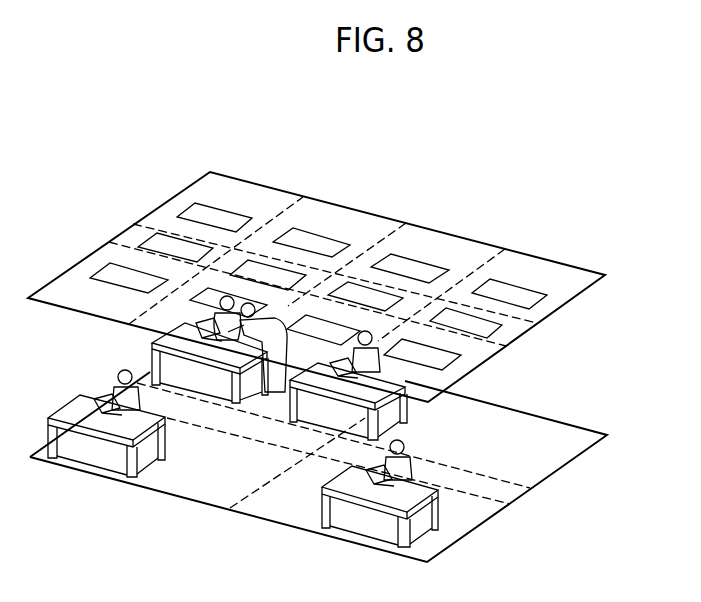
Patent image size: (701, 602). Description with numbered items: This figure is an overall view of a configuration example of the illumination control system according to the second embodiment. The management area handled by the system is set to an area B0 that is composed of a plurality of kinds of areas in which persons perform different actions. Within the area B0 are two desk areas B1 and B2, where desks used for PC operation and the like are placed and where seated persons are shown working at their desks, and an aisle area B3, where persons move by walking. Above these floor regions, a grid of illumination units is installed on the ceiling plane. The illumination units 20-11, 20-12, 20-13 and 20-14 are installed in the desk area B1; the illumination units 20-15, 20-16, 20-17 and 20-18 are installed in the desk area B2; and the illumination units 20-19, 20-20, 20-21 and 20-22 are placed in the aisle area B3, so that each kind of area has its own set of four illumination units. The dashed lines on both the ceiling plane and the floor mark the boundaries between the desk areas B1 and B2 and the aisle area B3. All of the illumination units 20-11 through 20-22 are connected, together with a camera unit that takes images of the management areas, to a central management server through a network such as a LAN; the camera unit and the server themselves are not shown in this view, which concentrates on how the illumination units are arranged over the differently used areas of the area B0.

The illumination unit 20-11 is at (98, 266).
The illumination unit 20-12 is at (206, 301).
The illumination unit 20-13 is at (348, 315).
The illumination unit 20-14 is at (452, 367).
The illumination unit 20-15 is at (187, 208).
The illumination unit 20-16 is at (301, 230).
The illumination unit 20-17 is at (447, 268).
The illumination unit 20-18 is at (531, 289).
The illumination unit 20-19 is at (138, 240).
The illumination unit 20-20 is at (231, 253).
The illumination unit 20-21 is at (393, 293).
The illumination unit 20-22 is at (497, 330).
The area B0 is at (568, 424).
The desk area B1 is at (452, 537).
The desk area B2 is at (571, 457).
The aisle area B3 is at (517, 495).